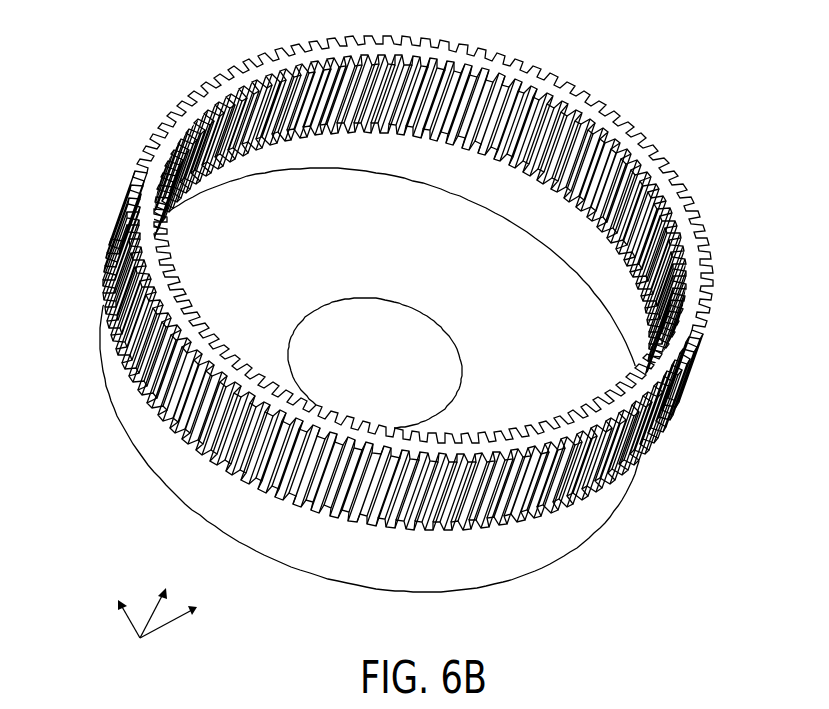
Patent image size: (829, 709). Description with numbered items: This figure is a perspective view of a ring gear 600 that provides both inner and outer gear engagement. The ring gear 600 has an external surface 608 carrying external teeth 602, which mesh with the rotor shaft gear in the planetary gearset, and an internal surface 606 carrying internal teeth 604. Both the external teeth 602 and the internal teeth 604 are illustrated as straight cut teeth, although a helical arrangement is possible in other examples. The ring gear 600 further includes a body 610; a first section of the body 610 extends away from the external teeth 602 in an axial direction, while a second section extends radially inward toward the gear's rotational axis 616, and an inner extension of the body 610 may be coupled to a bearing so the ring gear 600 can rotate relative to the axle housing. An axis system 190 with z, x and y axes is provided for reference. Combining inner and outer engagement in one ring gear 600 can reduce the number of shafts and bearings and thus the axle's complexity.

The ring gear 600 is at (712, 77).
The external teeth 602 is at (118, 237).
The internal teeth 604 is at (344, 99).
The internal surface 606 is at (406, 106).
The external surface 608 is at (110, 254).
The body 610 is at (301, 254).
The rotational axis 616 is at (399, 336).
The axis system 190 is at (191, 577).